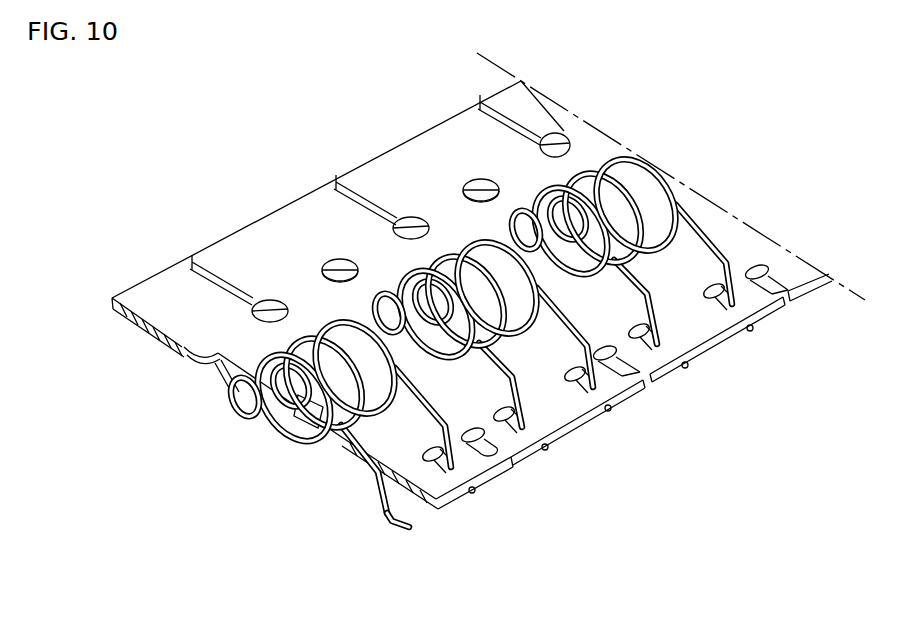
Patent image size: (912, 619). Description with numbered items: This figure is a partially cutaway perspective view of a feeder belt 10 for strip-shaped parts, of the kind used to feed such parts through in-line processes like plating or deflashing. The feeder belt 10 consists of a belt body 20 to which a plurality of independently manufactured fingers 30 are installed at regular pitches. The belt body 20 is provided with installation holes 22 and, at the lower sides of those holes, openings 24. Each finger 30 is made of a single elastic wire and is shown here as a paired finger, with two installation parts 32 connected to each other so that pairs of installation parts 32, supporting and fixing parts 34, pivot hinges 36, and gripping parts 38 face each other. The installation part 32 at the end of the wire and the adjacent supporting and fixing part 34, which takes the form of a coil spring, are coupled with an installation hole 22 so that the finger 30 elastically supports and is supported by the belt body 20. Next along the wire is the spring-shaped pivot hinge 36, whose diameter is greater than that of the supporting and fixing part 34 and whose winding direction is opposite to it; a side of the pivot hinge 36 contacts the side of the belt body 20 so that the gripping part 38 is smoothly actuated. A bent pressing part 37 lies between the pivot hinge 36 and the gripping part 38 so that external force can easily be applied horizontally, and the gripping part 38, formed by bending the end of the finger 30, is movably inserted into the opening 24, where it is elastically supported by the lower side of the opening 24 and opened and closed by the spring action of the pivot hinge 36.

The feeder belt 10 is at (262, 207).
The belt body 20 is at (341, 288).
The installation hole 22 is at (597, 278).
The opening 24 is at (524, 330).
The finger 30 is at (367, 290).
The installation part 32 is at (232, 400).
The supporting and fixing part 34 is at (525, 200).
The pivot hinge 36 is at (590, 178).
The bent pressing part 37 is at (377, 478).
The gripping part 38 is at (400, 518).